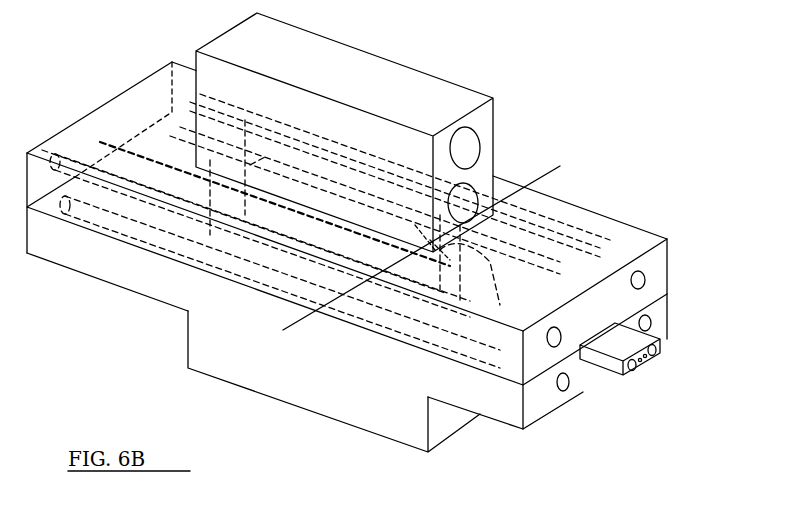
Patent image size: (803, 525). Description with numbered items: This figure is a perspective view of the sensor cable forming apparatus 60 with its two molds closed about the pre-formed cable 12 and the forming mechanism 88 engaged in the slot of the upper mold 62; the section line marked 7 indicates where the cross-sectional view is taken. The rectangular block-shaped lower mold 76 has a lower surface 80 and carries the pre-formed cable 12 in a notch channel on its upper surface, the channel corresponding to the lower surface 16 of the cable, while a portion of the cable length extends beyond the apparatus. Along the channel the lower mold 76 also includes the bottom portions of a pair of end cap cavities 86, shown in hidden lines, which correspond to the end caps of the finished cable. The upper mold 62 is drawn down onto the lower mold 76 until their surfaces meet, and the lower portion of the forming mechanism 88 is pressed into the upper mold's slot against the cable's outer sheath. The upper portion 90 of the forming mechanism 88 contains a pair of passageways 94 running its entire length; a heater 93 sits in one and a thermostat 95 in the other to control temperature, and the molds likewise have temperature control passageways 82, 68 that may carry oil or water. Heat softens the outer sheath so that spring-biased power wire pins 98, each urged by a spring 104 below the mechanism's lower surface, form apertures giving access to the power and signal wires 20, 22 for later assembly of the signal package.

The pre-formed cable 12 is at (614, 328).
The lower surface of the cable 16 is at (608, 368).
The power wires 20 is at (633, 371).
The signal wires 22 is at (647, 358).
The sensor cable forming apparatus 60 is at (645, 110).
The upper mold 62 is at (672, 266).
The temperature control passageways of the upper mold 68 is at (639, 272).
The lower mold 76 is at (672, 304).
The lower surface of the lower mold 80 is at (460, 410).
The temperature control passageways of the lower mold 82 is at (652, 322).
The end cap cavities 86 is at (160, 190).
The forming mechanism 88 is at (393, 58).
The upper portion of the forming mechanism 90 is at (434, 74).
The heater 93 is at (470, 147).
The passageways of the forming mechanism 94 is at (474, 127).
The thermostat 95 is at (470, 203).
The power wire pins 98 is at (437, 245).
The spring 104 is at (425, 230).
The section line 7- 7 is at (558, 189).